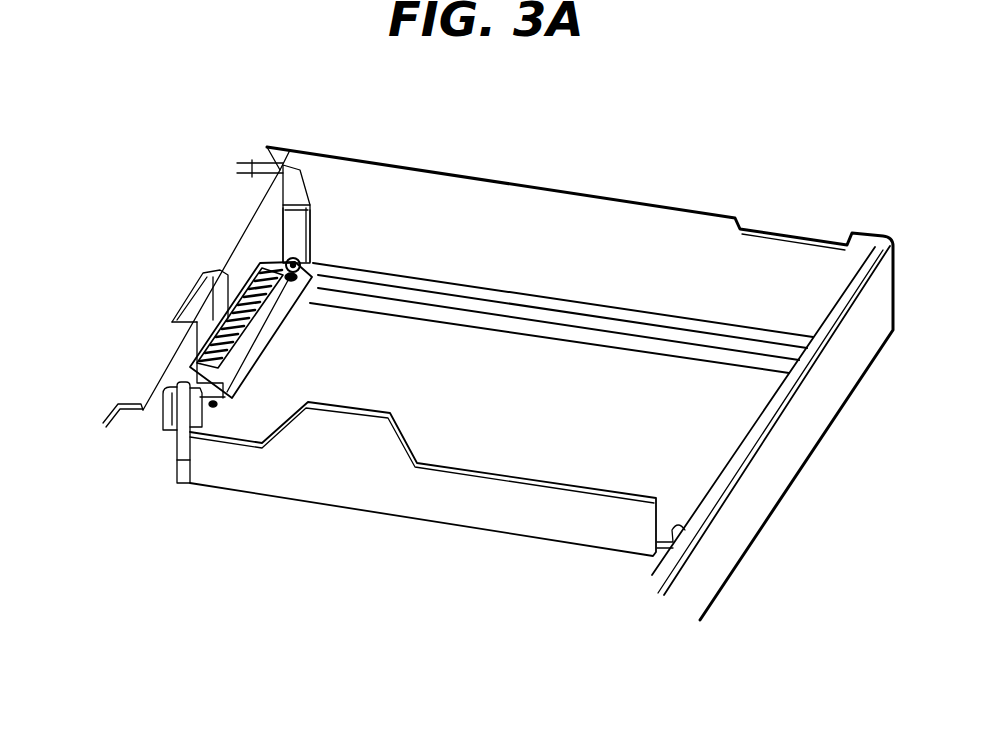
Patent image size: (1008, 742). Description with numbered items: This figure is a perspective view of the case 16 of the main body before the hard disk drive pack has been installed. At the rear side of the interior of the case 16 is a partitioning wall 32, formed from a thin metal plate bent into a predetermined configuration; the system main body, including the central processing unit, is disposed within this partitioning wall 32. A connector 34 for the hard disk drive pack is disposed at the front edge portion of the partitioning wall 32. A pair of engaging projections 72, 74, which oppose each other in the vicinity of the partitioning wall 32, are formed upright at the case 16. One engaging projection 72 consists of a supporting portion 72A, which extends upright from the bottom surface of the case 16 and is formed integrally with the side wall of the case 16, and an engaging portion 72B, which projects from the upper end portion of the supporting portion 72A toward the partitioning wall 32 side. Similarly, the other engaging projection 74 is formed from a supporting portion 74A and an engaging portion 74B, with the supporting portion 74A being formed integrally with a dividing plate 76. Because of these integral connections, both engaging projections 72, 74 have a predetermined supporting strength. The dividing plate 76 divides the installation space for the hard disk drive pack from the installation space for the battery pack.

The case 16 is at (590, 207).
The partitioning wall 32 is at (252, 163).
The connector for HDD pack 34 is at (263, 335).
The engaging projection 72 is at (177, 452).
The supporting portion 72A is at (181, 462).
The engaging portion 72B is at (183, 383).
The engaging projection 74 is at (309, 203).
The supporting portion 74A is at (313, 225).
The engaging portion 74B is at (282, 208).
The dividing plate 76 is at (442, 506).